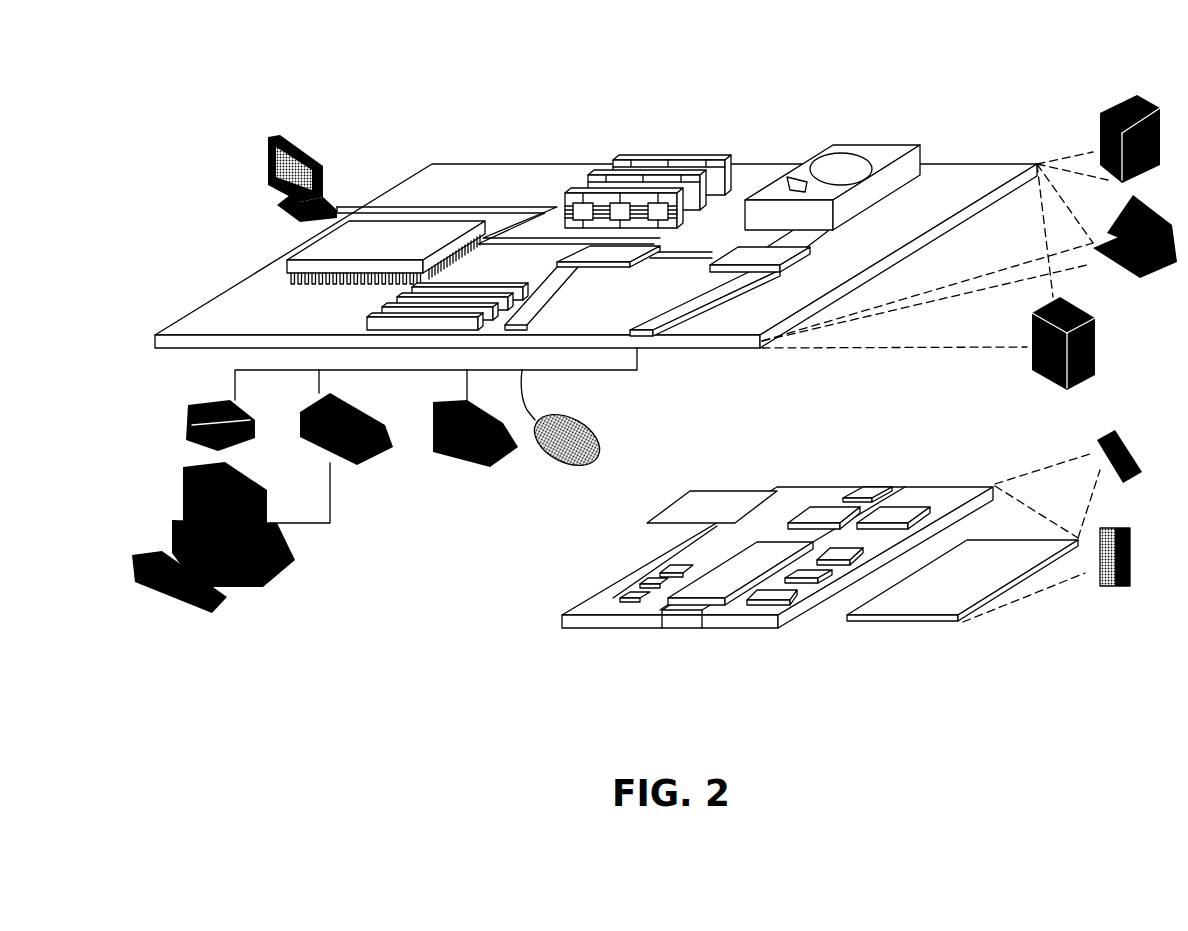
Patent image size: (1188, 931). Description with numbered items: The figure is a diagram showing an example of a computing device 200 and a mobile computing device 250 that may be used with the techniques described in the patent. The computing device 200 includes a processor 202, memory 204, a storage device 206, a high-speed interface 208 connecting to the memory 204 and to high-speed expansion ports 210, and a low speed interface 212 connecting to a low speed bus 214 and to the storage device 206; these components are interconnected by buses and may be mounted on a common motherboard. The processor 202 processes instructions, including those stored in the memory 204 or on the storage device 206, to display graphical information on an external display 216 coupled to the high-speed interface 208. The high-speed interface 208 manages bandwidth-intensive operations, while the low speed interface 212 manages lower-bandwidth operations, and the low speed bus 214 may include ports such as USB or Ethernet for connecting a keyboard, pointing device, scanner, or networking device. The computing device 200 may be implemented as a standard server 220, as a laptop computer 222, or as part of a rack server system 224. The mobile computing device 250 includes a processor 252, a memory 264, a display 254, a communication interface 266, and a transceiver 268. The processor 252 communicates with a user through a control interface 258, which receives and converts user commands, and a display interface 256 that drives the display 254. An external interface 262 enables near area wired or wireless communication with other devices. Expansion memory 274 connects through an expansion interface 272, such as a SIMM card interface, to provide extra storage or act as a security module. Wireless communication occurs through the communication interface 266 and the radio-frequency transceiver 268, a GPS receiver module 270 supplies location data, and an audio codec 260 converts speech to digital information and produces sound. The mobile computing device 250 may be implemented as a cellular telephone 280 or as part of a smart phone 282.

The computing device 200 is at (392, 102).
The processor 202 is at (300, 243).
The memory 204 is at (658, 157).
The storage device 206 is at (832, 145).
The high-speed interface 208 is at (613, 267).
The high-speed expansion ports 210 is at (367, 315).
The low speed interface 212 is at (737, 247).
The low speed bus 214 is at (643, 323).
The display 216 is at (276, 135).
The standard server 220 is at (1105, 107).
The laptop computer 222 is at (1165, 270).
The rack server system 224 is at (1094, 344).
The mobile computing device 250 is at (516, 644).
The processor 252 is at (725, 556).
The display 254 is at (1017, 541).
The display interface 256 is at (788, 600).
The control interface 258 is at (828, 578).
The audio codec 260 is at (862, 552).
The external interface 262 is at (683, 630).
The memory 264 is at (640, 582).
The communication interface 266 is at (817, 503).
The transceiver 268 is at (907, 510).
The GPS receiver module 270 is at (868, 487).
The expansion interface 272 is at (775, 486).
The expansion memory 274 is at (695, 491).
The cellular telephone 280 is at (1108, 432).
The smart phone 282 is at (1118, 528).